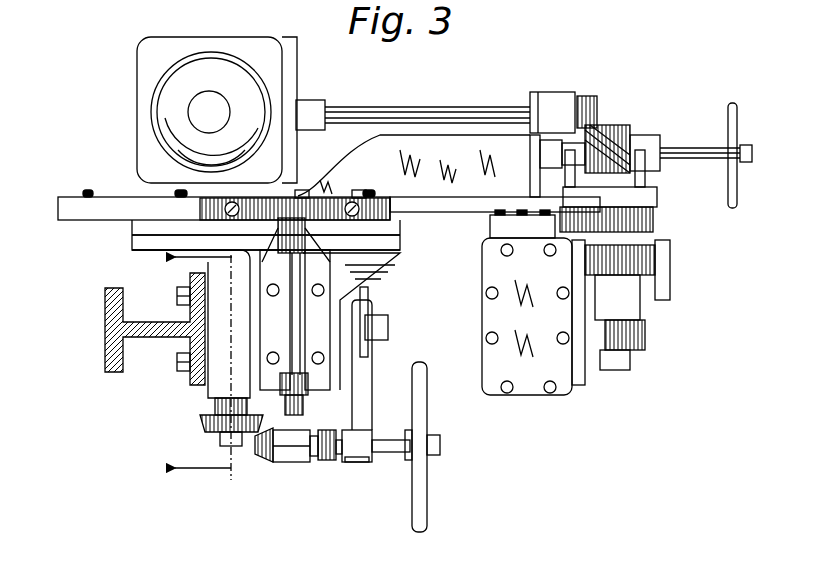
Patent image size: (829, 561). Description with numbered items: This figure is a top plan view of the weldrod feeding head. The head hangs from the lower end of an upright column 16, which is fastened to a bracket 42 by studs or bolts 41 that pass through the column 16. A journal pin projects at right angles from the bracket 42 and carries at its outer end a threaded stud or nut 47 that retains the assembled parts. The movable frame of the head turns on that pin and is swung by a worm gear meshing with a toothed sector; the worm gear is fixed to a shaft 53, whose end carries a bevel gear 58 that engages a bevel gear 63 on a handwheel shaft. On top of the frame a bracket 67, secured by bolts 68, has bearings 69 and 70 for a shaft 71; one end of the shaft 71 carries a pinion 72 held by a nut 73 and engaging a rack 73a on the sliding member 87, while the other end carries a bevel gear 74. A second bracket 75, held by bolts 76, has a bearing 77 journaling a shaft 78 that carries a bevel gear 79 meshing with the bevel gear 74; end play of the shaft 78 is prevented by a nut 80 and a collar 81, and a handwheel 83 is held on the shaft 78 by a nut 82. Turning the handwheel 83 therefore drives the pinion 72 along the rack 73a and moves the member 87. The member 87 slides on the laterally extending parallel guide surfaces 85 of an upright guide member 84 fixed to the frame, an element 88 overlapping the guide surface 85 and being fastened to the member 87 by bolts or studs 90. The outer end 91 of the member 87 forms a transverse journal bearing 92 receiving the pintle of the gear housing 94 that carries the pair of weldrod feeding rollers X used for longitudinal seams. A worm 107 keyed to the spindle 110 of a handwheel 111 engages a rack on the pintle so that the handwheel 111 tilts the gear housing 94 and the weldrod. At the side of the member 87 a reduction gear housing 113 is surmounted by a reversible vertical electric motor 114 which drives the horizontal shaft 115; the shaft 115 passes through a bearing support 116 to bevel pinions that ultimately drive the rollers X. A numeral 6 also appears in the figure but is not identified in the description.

The section line 6 is at (189, 365).
The upright column 16 is at (105, 325).
The studs or bolts 41 is at (177, 294).
The bracket 42 is at (208, 392).
The stud or nut 47 is at (388, 330).
The shaft 53 is at (231, 445).
The bevel gear 58 is at (205, 425).
The bevel gear 63 is at (262, 460).
The bracket 67 is at (332, 338).
The bolts 68 is at (325, 281).
The bearing 69 is at (305, 242).
The bearing 70 is at (309, 388).
The shaft 71 is at (292, 325).
The pinion 72 is at (303, 206).
The nut 73 is at (303, 194).
The rack 73a is at (360, 194).
The bevel gear 74 is at (294, 462).
The bracket 75 is at (368, 396).
The bolts 76 is at (370, 318).
The bearing 77 is at (360, 463).
The shaft 78 is at (390, 452).
The bevel gear 79 is at (326, 460).
The nut 80 is at (314, 457).
The collar 81 is at (370, 438).
The nut 82 is at (440, 444).
The handwheel 83 is at (427, 488).
The guide member 84 is at (132, 236).
The guide surface 85 is at (400, 222).
The movably mounted member 87 is at (455, 165).
The element 88 is at (402, 240).
The bolts or studs 90 is at (88, 190).
The outer end 91 is at (530, 180).
The transverse journal bearing 92 is at (653, 222).
The gear housing 94 is at (530, 385).
The worm 107 is at (618, 128).
The spindle 110 is at (708, 148).
The handwheel 111 is at (732, 103).
The reduction gear housing 113 is at (137, 112).
The electric driving motor 114 is at (152, 94).
The horizontal shaft 115 is at (410, 106).
The bearing support 116 is at (553, 92).
The pair of weldrod feeding rollers X is at (648, 336).